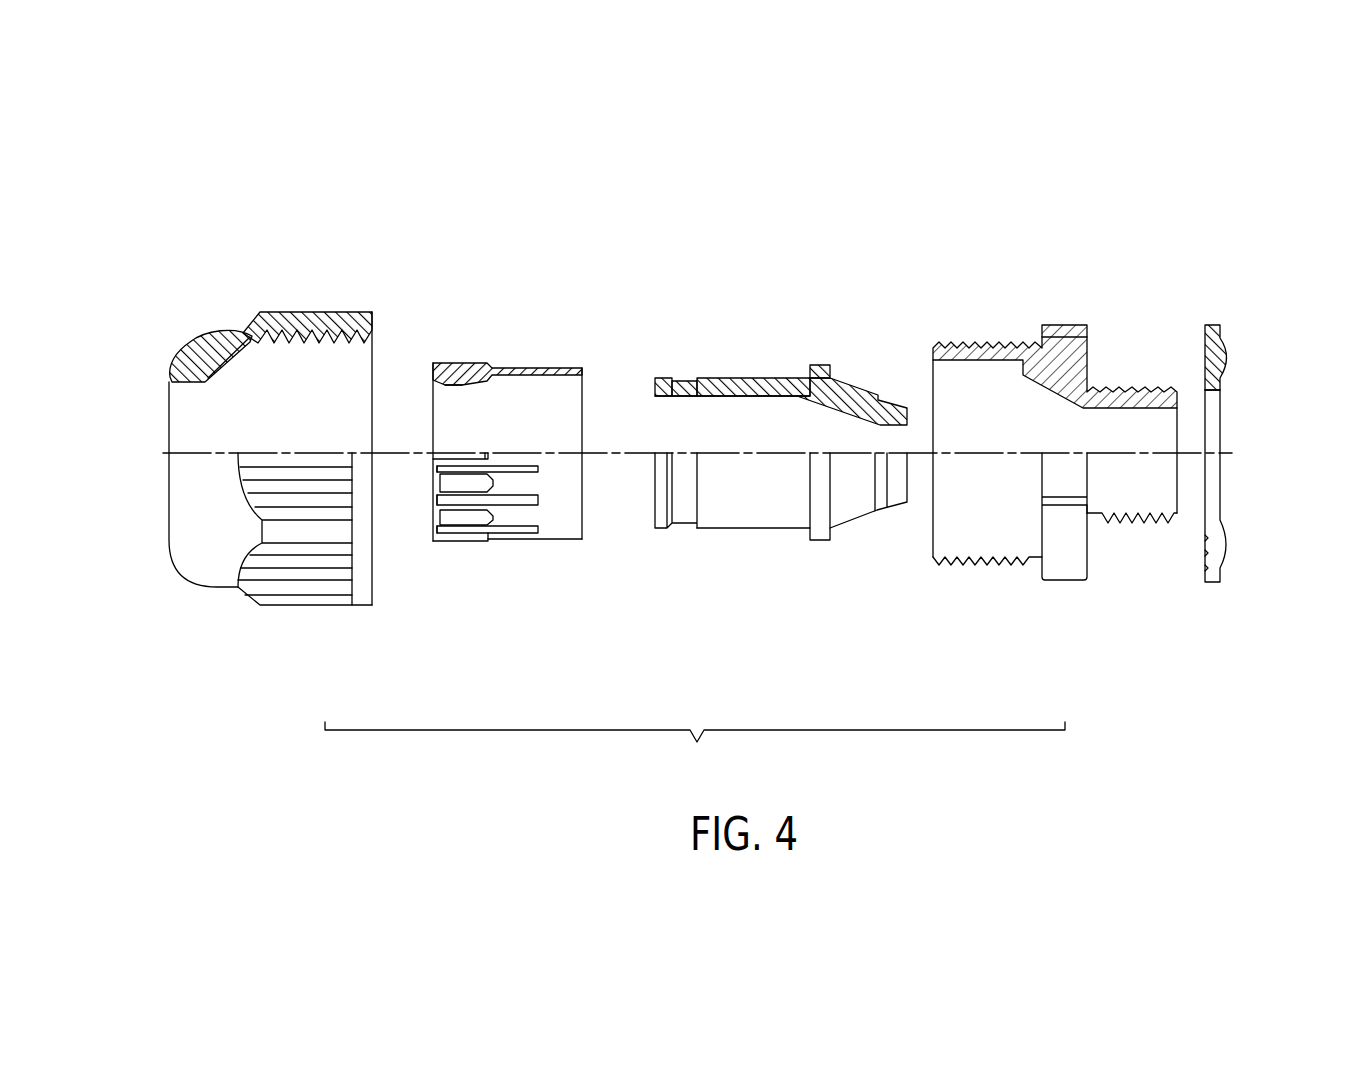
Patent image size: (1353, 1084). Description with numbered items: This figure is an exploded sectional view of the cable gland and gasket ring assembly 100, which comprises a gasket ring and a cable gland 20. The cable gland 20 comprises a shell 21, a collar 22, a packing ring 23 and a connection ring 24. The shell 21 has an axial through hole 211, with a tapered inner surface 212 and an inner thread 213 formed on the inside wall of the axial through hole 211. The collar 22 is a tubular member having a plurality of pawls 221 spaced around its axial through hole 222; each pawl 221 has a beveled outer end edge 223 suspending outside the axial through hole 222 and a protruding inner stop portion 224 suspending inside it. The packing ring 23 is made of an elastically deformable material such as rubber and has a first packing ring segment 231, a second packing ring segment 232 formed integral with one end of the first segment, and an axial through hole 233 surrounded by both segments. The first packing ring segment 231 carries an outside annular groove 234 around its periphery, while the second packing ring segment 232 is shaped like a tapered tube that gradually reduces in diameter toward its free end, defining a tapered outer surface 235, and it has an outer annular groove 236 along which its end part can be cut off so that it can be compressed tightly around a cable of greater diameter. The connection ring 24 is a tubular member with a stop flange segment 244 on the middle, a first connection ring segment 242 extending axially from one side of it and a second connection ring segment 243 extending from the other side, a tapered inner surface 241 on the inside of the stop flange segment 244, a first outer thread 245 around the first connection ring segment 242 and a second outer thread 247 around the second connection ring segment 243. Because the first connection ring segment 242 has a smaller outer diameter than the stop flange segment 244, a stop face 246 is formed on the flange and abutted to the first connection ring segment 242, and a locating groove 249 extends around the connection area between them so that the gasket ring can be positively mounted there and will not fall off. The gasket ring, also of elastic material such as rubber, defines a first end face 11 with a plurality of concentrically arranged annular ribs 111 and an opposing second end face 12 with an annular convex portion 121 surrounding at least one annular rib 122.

The cable gland and gasket ring assembly 100 is at (313, 223).
The cable gland 20 is at (695, 750).
The shell 21 is at (249, 477).
The axial through hole 211 is at (208, 428).
The tapered inner surface 212 is at (227, 370).
The inner thread 213 is at (343, 343).
The collar 22 is at (518, 478).
The pawls 221 is at (461, 520).
The axial through hole 222 is at (557, 426).
The beveled outer end edge 223 is at (432, 363).
The protruding inner stop portion 224 is at (462, 385).
The packing ring 23 is at (764, 477).
The first packing ring segment 231 is at (767, 378).
The second packing ring segment 232 is at (843, 385).
The axial through hole 233 is at (695, 424).
The outside annular groove 234 is at (684, 378).
The tapered outer surface 235 is at (870, 385).
The outer annular groove 236 is at (882, 503).
The connection ring 24 is at (1066, 447).
The tapered inner surface 241 is at (1045, 385).
The first connection ring segment 242 is at (1152, 540).
The second connection ring segment 243 is at (965, 333).
The stop flange segment 244 is at (1068, 323).
The first outer thread 245 is at (1133, 382).
The stop face 246 is at (1087, 545).
The second outer thread 247 is at (987, 345).
The locating groove 249 is at (1033, 347).
The first end face 11 is at (1239, 401).
The annular ribs 111 is at (1215, 330).
The second end face 12 is at (1262, 312).
The annular convex portion 121 is at (1227, 358).
The annular rib 122 is at (1218, 382).